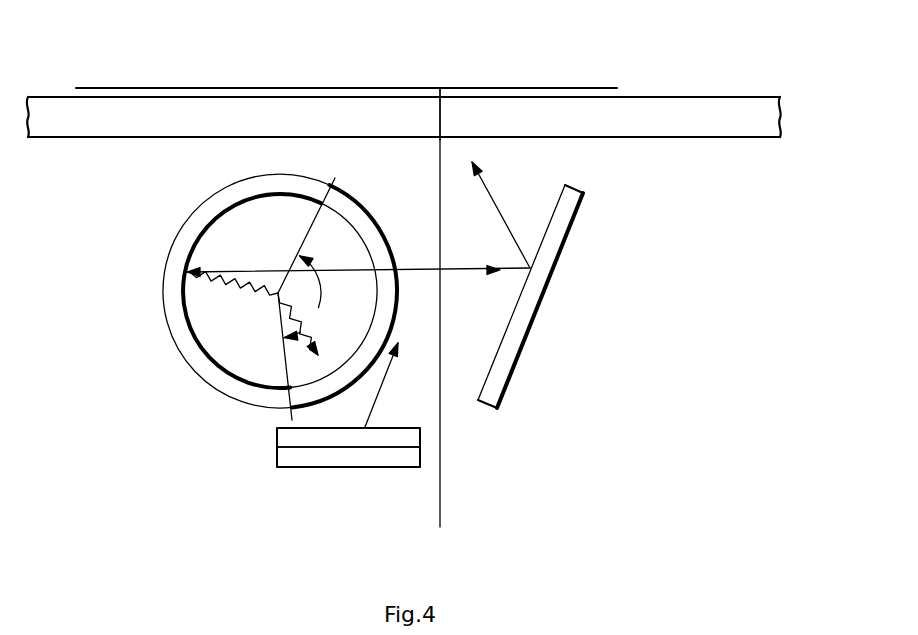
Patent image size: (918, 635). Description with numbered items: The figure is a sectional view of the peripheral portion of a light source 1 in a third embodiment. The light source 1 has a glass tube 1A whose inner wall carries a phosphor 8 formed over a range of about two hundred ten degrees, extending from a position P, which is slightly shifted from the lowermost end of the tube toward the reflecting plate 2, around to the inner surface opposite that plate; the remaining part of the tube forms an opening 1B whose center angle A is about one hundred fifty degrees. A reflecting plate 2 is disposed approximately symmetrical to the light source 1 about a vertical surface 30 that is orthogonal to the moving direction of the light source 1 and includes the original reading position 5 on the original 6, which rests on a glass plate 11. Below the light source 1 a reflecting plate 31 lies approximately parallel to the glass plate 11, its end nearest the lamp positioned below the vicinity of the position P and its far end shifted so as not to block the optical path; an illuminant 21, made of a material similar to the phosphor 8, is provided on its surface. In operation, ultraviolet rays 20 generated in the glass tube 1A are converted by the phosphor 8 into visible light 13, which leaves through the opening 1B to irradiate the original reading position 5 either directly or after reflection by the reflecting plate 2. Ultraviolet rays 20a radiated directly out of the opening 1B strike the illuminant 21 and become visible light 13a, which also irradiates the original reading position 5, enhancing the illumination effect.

The light source 1 is at (140, 316).
The glass tube 1A is at (168, 253).
The opening 1B is at (325, 223).
The reflecting plate 2 is at (508, 363).
The original reading position 5 is at (446, 92).
The original 6 is at (187, 88).
The phosphor 8 is at (203, 358).
The glass plate 11 is at (697, 102).
The visible light 13 is at (463, 273).
The visible light 13a is at (399, 385).
The ultraviolet rays 20 is at (235, 290).
The ultraviolet rays 20a is at (308, 340).
The illuminant 21 is at (275, 438).
The vertical surface 30 is at (440, 490).
The reflecting plate 31 is at (310, 467).
The center angle A is at (322, 282).
The position P is at (283, 380).